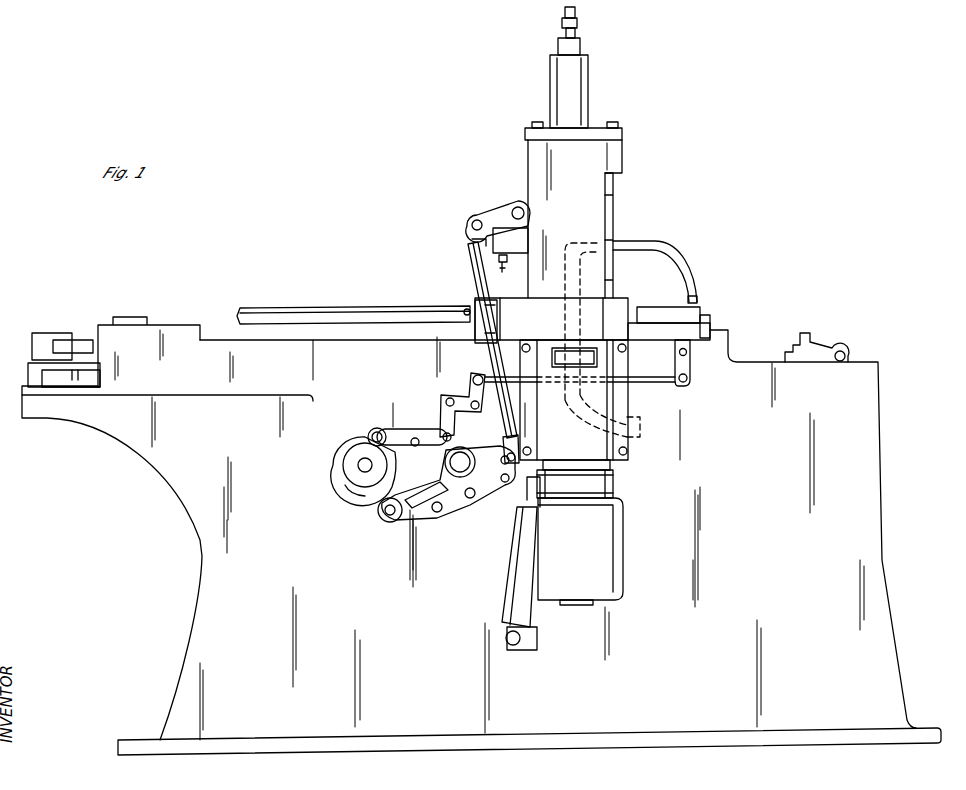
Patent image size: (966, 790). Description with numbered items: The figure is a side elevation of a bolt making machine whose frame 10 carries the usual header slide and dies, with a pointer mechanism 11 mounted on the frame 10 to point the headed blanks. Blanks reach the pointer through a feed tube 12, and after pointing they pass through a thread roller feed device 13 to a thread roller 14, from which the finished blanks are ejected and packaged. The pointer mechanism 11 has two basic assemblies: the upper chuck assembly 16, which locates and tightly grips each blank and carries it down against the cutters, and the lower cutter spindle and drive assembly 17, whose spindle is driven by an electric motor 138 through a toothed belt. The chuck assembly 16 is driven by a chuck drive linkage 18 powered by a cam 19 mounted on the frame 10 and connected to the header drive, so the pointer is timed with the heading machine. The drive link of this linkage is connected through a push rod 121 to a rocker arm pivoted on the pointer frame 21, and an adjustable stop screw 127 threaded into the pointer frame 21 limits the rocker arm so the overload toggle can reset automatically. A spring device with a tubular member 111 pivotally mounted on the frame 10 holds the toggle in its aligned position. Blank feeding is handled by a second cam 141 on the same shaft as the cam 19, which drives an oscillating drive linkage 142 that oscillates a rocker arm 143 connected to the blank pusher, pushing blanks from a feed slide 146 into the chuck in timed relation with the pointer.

The frame 10 is at (867, 518).
The pointer mechanism 11 is at (613, 222).
The feed tube 12 is at (675, 262).
The thread roller feed device 13 is at (340, 313).
The thread roller 14 is at (164, 325).
The chuck assembly 16 is at (613, 182).
The cutter spindle and drive assembly 17 is at (613, 475).
The chuck drive linkage 18 is at (460, 517).
The cam 19 is at (363, 498).
The pointer frame 21 is at (527, 170).
The tubular member 111 is at (507, 590).
The push rod 121 is at (478, 275).
The adjustable stop screw 127 is at (504, 266).
The electric motor 138 is at (623, 550).
The cam 141 is at (360, 447).
The oscillating drive linkage 142 is at (438, 417).
The rocker arm 143 is at (690, 363).
The feed slide 146 is at (712, 327).